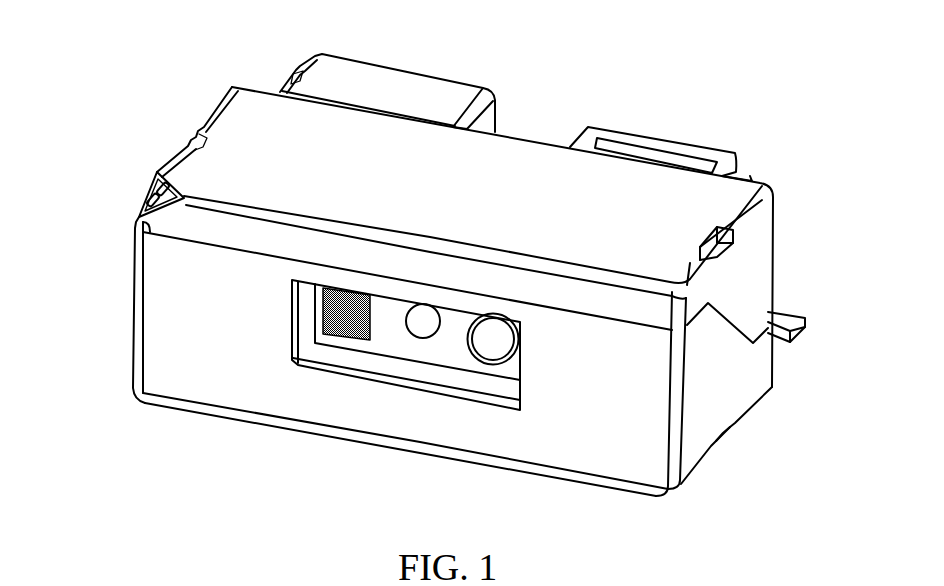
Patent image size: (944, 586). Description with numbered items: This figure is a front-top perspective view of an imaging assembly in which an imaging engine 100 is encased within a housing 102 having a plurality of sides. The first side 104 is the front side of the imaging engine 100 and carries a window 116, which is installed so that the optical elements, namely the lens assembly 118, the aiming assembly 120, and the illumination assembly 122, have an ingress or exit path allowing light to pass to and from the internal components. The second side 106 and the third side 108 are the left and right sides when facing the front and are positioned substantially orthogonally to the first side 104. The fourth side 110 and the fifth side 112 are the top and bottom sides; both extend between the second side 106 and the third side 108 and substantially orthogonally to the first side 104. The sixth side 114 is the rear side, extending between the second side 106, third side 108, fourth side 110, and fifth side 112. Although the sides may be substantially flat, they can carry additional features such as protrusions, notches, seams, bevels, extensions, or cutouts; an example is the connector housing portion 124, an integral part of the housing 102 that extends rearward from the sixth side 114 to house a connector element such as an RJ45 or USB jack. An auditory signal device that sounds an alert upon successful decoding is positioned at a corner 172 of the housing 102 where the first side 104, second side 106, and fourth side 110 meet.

The imaging engine 100 is at (138, 44).
The housing 102 is at (243, 128).
The first side 104 is at (175, 360).
The second side 106 is at (113, 280).
The third side 108 is at (732, 358).
The fourth side 110 is at (496, 165).
The fifth side 112 is at (613, 514).
The sixth side 114 is at (630, 110).
The window 116 is at (373, 363).
The lens assembly 118 is at (492, 364).
The aiming assembly 120 is at (418, 340).
The illumination assembly 122 is at (328, 326).
The connector housing portion 124 is at (388, 82).
The corner 172 is at (128, 185).